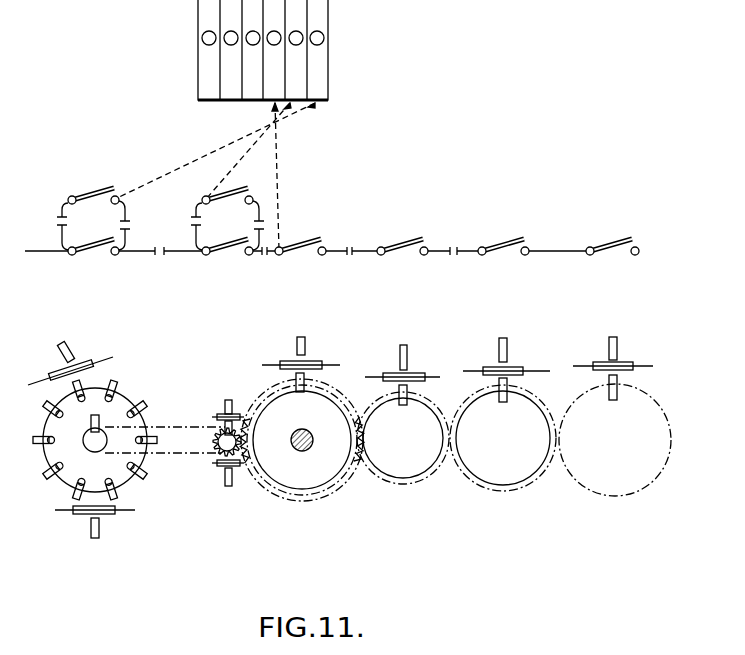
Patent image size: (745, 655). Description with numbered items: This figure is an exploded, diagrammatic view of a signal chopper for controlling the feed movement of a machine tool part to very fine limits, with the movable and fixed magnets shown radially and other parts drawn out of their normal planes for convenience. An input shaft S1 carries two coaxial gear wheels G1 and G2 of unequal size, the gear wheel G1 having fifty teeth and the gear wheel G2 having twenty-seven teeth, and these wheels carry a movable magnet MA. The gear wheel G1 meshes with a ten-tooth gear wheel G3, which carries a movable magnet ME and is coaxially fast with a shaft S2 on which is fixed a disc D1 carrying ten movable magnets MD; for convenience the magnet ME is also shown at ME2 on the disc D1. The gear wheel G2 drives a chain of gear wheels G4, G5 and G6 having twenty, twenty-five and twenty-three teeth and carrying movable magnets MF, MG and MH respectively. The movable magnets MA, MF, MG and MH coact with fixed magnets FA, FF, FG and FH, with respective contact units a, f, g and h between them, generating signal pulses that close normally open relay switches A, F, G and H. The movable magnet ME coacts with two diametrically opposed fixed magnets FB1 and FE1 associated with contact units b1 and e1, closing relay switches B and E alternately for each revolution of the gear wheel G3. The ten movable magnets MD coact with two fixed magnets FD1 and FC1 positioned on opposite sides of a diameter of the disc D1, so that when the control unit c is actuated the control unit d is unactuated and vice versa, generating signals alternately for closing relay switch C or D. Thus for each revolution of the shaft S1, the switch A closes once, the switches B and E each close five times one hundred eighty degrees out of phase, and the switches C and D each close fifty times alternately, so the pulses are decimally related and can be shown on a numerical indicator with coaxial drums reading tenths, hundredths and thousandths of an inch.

The relay switch A is at (300, 336).
The relay switch B is at (227, 204).
The relay switch C is at (93, 204).
The relay switch D is at (95, 358).
The relay switch E is at (228, 399).
The relay switch F is at (403, 344).
The relay switch G is at (503, 337).
The relay switch H is at (613, 336).
The disc D1 is at (43, 453).
The shaft S2 is at (84, 446).
The movable magnets MD is at (138, 402).
The movable magnet ME is at (89, 424).
The movable magnet ME2 is at (222, 433).
The fixed magnet FD1 is at (58, 347).
The control unit c is at (80, 360).
The control unit d is at (108, 513).
The fixed magnet FC1 is at (97, 540).
The gear wheel G3 is at (216, 448).
The fixed magnet FB1 is at (226, 398).
The contact unit b1 is at (222, 416).
The contact unit e1 is at (223, 466).
The fixed magnet FE1 is at (229, 487).
The gear wheel G1 is at (280, 492).
The gear wheel G2 is at (347, 476).
The input shaft S1 is at (306, 452).
The fixed magnet FA is at (303, 338).
The contact unit a is at (283, 360).
The movable magnet MA is at (362, 358).
The gear wheel G4 is at (420, 452).
The fixed magnet FF is at (407, 345).
The contact unit f is at (412, 393).
The movable magnet MF is at (427, 380).
The gear wheel G5 is at (520, 455).
The fixed magnet FG is at (507, 340).
The contact unit g is at (511, 390).
The movable magnet MG is at (525, 376).
The gear wheel G6 is at (633, 453).
The fixed magnet FH is at (617, 340).
The contact unit h is at (618, 390).
The movable magnet MH is at (634, 376).